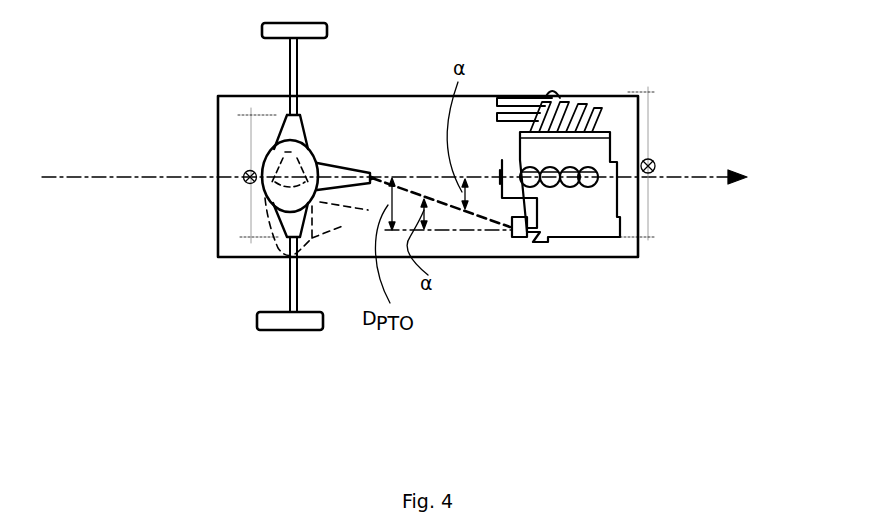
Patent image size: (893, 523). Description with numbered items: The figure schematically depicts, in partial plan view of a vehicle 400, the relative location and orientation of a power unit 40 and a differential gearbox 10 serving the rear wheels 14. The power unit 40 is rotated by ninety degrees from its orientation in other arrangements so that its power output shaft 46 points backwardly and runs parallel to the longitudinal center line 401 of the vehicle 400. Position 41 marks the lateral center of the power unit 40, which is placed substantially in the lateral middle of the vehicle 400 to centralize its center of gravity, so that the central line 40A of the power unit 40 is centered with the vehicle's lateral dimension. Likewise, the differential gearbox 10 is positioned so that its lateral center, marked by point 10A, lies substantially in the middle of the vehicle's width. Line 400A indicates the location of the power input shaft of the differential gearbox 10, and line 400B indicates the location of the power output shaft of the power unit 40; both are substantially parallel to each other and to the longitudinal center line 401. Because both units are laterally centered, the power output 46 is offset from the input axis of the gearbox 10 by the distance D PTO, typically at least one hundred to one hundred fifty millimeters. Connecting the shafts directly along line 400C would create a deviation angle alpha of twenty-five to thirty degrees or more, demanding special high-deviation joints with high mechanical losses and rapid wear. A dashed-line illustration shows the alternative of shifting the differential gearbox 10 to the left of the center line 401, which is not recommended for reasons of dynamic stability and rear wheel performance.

The vehicle 400 is at (707, 64).
The longitudinal center line 401 is at (91, 175).
The wheels 14 is at (241, 75).
The differential gearbox 10 is at (236, 219).
The lateral center point of differential gearbox 10A is at (244, 172).
The power input shaft line of differential gearbox 400A is at (408, 175).
The power output shaft line of power unit 400B is at (457, 231).
The drive shaft connection line 400C is at (382, 183).
The power unit 40 is at (622, 250).
The central line of power unit 40A is at (498, 177).
The lateral center position of power unit 41 is at (655, 172).
The power output shaft 46 is at (522, 238).